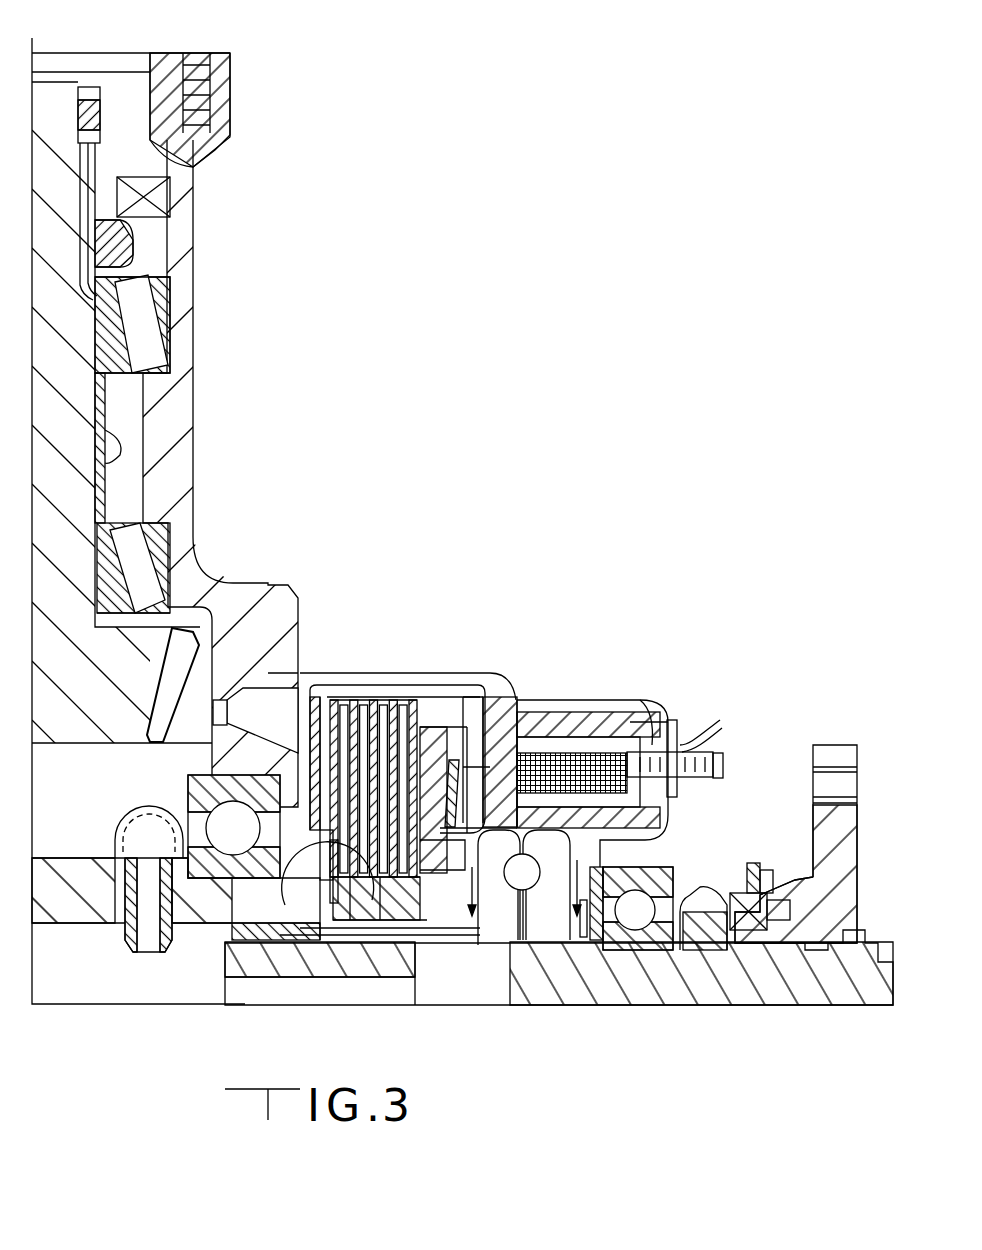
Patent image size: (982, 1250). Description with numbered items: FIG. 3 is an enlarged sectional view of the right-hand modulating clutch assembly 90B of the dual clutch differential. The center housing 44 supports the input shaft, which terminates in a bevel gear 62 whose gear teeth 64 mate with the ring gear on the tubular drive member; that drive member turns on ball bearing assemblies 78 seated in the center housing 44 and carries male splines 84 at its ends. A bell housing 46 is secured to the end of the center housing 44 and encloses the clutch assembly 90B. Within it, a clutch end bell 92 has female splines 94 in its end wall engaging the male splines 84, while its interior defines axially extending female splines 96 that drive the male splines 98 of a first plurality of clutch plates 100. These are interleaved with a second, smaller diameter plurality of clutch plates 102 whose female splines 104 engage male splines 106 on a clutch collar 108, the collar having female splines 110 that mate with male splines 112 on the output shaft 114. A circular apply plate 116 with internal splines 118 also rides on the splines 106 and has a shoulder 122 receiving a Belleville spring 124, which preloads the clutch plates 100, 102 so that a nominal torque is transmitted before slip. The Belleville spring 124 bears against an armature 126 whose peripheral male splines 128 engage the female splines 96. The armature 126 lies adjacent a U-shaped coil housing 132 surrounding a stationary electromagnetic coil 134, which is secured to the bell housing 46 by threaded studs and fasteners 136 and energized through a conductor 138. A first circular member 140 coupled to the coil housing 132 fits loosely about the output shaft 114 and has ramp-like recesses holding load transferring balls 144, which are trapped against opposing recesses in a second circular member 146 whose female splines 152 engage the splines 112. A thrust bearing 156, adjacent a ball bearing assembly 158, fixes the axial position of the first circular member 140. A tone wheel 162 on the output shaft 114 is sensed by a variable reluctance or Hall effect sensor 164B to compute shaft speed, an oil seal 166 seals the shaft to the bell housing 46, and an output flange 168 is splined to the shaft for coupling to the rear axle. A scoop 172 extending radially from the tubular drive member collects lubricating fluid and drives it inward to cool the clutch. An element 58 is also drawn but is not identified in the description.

The center housing 44 is at (195, 370).
The bell housing 46 is at (335, 673).
The seal 58 is at (100, 97).
The bevel gear 62 is at (80, 715).
The gear teeth 64 is at (168, 705).
The ball bearing assemblies 78 is at (200, 792).
The male splines or gear teeth 84 is at (298, 925).
The modulating clutch assembly 90B is at (622, 615).
The clutch end bell 92 is at (377, 700).
The female splines or gear teeth 94 is at (290, 900).
The female splines 96 is at (427, 735).
The male splines 98 is at (345, 703).
The first plurality of clutch plates 100 is at (388, 703).
The second plurality of clutch plates 102 is at (269, 909).
The female splines 104 is at (347, 920).
The male splines 106 is at (417, 917).
The clutch collar 108 is at (432, 910).
The female splines or gear teeth 110 is at (320, 992).
The male splines or gear teeth 112 is at (508, 1003).
The output shaft 114 is at (698, 988).
The circular apply plate 116 is at (483, 740).
The internal splines or gear teeth 118 is at (460, 915).
The shoulder 122 is at (468, 815).
The Belleville spring 124 is at (490, 750).
The armature 126 is at (572, 715).
The male splines or gear teeth 128 is at (468, 750).
The U-shaped circular coil housing 132 is at (648, 698).
The electromagnetic coil 134 is at (703, 752).
The threaded studs and fasteners 136 is at (707, 773).
The conductor 138 is at (720, 720).
The first circular member 140 is at (618, 950).
The load transferring ball 144 is at (602, 848).
The second circular member 146 is at (575, 930).
The female splines or gear teeth 152 is at (490, 935).
The thrust bearing 156 is at (597, 945).
The ball bearing assembly 158 is at (680, 943).
The tone wheel 162 is at (752, 947).
The variable reluctance or Hall effect sensor 164B is at (746, 812).
The oil seals 166 is at (738, 880).
The output flange 168 is at (866, 745).
The scavengers or scoops 172 is at (115, 828).